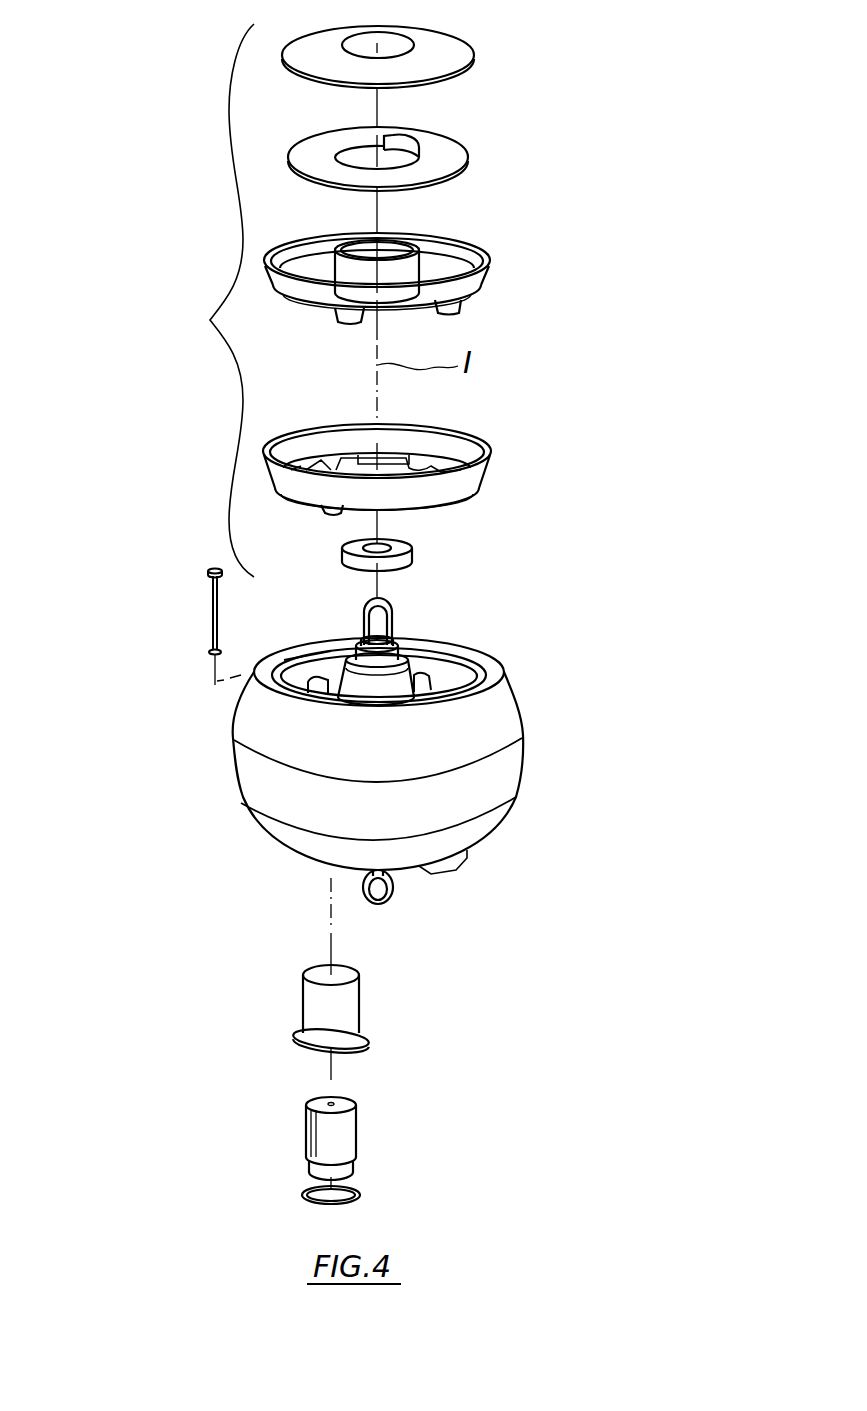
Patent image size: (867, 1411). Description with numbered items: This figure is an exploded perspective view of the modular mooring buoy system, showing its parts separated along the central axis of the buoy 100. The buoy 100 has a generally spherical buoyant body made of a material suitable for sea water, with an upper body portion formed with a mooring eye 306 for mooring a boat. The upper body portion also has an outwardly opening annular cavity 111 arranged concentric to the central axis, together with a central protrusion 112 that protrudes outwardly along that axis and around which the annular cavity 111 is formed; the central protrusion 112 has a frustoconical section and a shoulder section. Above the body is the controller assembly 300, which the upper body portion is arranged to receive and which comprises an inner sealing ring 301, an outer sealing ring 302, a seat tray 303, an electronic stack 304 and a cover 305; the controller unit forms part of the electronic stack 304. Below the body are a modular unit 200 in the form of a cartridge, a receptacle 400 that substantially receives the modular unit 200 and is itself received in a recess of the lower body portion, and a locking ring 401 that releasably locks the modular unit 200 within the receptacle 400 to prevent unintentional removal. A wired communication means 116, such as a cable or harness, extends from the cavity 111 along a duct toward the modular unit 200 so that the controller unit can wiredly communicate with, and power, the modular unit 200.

The buoy 100 is at (527, 728).
The annular cavity 111 is at (450, 680).
The central protrusion 112 is at (377, 678).
The wired communication means 116 is at (206, 629).
The modular unit 200 is at (295, 1122).
The controller assembly 300 is at (194, 300).
The inner sealing ring 301 is at (422, 550).
The outer sealing ring 302 is at (497, 453).
The seat tray 303 is at (495, 257).
The electronic stack 304 is at (477, 157).
The cover 305 is at (483, 52).
The mooring eye 306 is at (363, 615).
The receptacle 400 is at (295, 997).
The locking ring 401 is at (295, 1187).